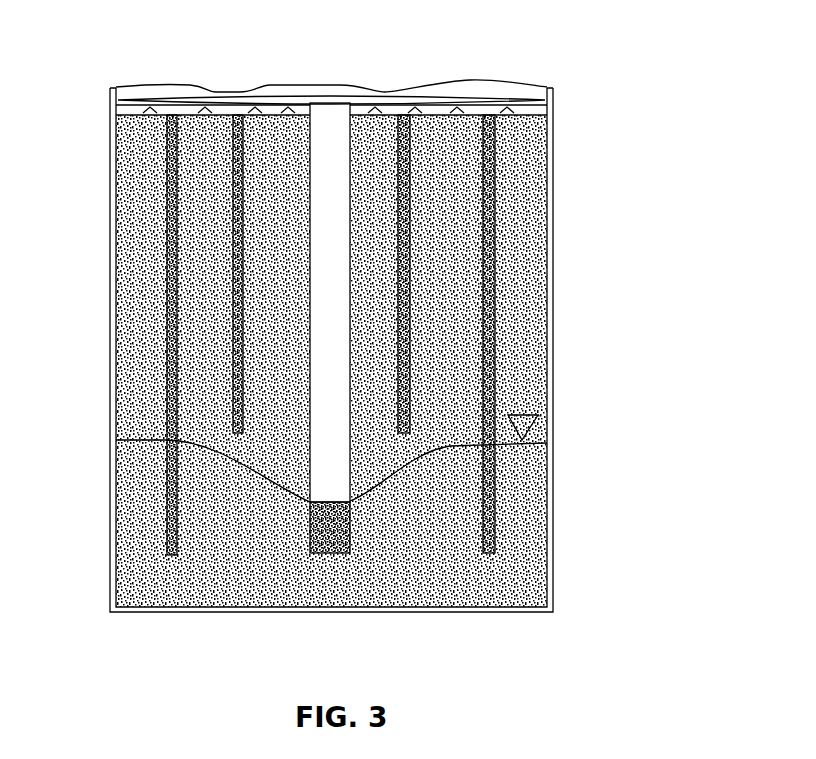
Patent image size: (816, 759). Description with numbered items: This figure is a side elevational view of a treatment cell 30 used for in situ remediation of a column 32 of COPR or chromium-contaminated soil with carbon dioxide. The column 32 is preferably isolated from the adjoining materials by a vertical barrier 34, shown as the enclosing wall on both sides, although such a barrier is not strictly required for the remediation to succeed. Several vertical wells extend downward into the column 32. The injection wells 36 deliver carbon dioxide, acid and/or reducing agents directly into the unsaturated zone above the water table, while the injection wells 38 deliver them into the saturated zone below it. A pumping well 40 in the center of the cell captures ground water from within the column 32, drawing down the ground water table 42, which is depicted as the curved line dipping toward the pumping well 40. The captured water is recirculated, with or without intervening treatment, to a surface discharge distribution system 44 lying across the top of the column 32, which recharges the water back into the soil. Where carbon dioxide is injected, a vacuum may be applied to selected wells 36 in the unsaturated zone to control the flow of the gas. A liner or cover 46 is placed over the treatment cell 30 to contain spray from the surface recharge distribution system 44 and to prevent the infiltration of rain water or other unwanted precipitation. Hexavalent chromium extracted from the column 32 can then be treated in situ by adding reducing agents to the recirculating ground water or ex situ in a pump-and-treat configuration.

The treatment cell 30 is at (562, 212).
The column 32 is at (530, 185).
The vertical barrier 34 is at (555, 256).
The injection wells 36 is at (198, 266).
The injection wells 38 is at (145, 343).
The pumping well 40 is at (362, 458).
The ground water table 42 is at (452, 464).
The surface discharge distribution system 44 is at (437, 92).
The liner or cover 46 is at (266, 84).